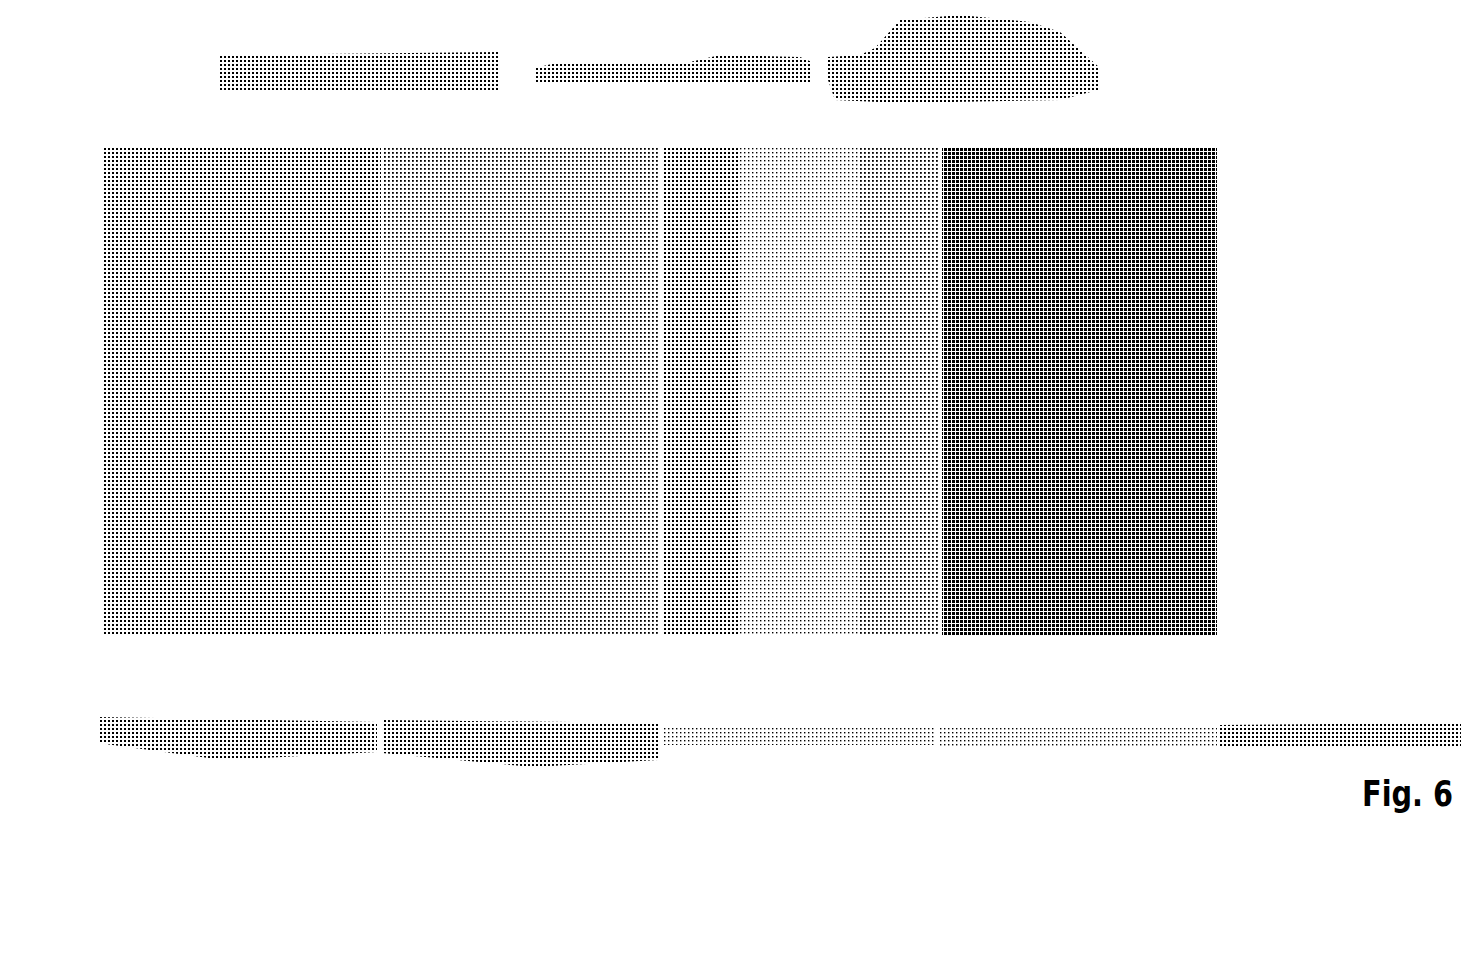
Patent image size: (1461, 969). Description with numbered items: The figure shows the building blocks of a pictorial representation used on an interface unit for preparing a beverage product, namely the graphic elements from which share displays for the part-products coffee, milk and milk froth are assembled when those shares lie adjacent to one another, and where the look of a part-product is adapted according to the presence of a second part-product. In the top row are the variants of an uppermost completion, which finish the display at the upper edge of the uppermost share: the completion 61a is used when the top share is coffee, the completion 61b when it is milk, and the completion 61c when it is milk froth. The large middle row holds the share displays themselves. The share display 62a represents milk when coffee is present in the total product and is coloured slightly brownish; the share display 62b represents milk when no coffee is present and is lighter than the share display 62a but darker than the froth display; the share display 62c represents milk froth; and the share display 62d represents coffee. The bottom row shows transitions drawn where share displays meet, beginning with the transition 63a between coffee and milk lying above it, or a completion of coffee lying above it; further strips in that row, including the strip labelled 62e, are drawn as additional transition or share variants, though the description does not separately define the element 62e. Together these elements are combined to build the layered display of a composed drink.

The uppermost completion variant for coffee 61a is at (248, 64).
The uppermost completion variant for milk 61b is at (584, 64).
The uppermost completion variant for milk froth 61c is at (866, 64).
The share display for milk with coffee present 62a is at (194, 159).
The share display for milk without coffee 62b is at (484, 159).
The share display for milk froth 62c is at (764, 159).
The share display for coffee 62d is at (1019, 147).
The fifth image block 62e is at (1316, 729).
The transition between coffee and milk or coffee completion lying thereabove 63a is at (191, 729).